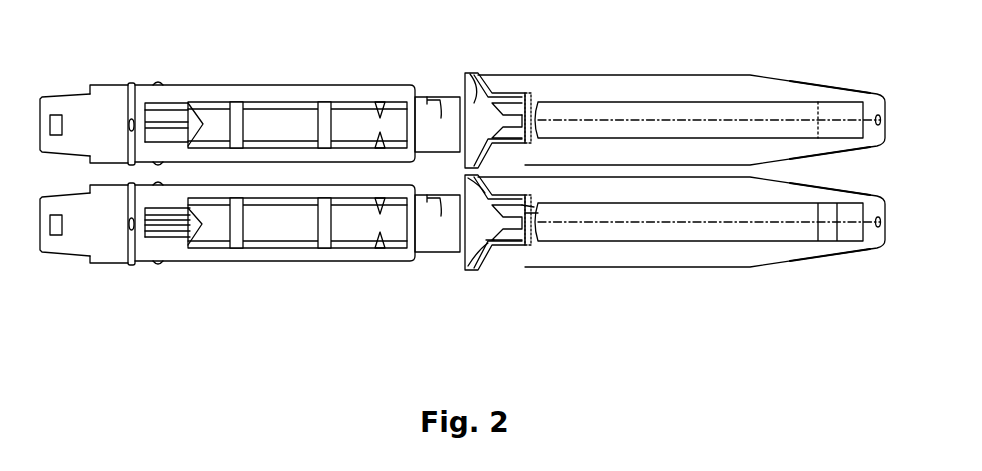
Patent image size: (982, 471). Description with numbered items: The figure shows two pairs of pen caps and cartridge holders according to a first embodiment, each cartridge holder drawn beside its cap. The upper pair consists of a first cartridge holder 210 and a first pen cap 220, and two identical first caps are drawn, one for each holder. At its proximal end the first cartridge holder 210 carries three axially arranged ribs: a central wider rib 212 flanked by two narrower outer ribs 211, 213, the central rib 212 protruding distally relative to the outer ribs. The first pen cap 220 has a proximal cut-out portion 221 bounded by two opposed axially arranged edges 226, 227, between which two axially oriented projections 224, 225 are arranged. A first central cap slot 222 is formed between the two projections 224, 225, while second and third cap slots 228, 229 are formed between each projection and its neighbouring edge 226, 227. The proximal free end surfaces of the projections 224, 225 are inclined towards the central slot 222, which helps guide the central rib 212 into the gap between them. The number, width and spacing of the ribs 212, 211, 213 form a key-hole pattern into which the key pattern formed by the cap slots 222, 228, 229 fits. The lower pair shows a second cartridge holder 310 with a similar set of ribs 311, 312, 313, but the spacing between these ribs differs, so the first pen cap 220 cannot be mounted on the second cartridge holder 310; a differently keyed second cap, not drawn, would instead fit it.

The first cartridge holder 210 is at (268, 85).
The outer rib 211 is at (183, 105).
The central wider rib 212 is at (174, 122).
The outer rib 213 is at (147, 142).
The first pen cap 220 is at (683, 75).
The proximal cut-out portion 221 is at (490, 53).
The first central cap slot 222 is at (515, 222).
The axially oriented projection 224 is at (517, 102).
The axially oriented projection 225 is at (517, 132).
The axially arranged edge 226 is at (470, 255).
The axially arranged edge 227 is at (488, 240).
The second cap slot 228 is at (534, 207).
The third cap slot 229 is at (537, 213).
The second cartridge holder 310 is at (280, 261).
The rib 311 is at (141, 214).
The rib 312 is at (163, 223).
The rib 313 is at (177, 233).